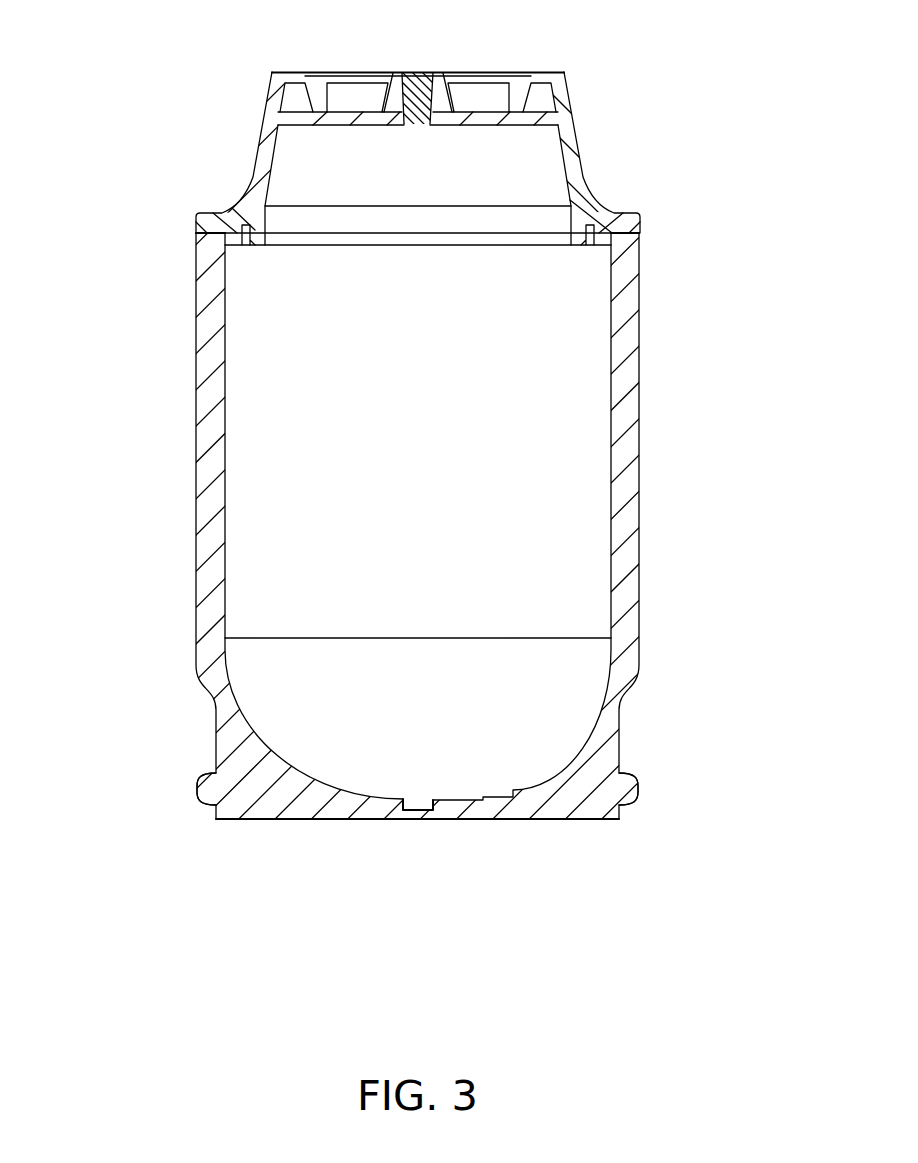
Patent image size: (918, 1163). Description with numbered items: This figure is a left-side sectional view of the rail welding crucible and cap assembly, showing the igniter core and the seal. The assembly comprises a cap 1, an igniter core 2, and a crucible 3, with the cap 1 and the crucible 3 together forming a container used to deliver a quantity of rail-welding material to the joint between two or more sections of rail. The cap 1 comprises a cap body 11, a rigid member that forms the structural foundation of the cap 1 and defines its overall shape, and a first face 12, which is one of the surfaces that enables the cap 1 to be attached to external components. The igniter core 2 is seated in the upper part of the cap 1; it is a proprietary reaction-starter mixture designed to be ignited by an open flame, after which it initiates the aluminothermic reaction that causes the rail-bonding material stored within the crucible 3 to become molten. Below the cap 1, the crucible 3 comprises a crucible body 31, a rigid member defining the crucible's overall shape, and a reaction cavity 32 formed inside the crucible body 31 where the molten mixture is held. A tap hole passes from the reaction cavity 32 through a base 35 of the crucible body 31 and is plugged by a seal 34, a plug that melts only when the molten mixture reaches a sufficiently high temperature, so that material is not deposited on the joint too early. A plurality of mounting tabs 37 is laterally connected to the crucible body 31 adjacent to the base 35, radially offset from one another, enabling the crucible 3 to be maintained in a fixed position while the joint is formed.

The cap 1 is at (222, 143).
The igniter core 2 is at (423, 72).
The crucible 3 is at (112, 497).
The cap body 11 is at (574, 146).
The first face 12 is at (552, 68).
The crucible body 31 is at (632, 441).
The reaction cavity 32 is at (431, 454).
The seal 34 is at (420, 813).
The base 35 is at (554, 826).
The plurality of mounting tabs 37 is at (200, 784).